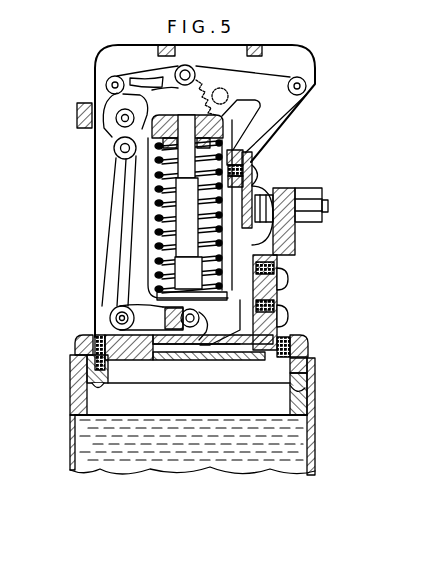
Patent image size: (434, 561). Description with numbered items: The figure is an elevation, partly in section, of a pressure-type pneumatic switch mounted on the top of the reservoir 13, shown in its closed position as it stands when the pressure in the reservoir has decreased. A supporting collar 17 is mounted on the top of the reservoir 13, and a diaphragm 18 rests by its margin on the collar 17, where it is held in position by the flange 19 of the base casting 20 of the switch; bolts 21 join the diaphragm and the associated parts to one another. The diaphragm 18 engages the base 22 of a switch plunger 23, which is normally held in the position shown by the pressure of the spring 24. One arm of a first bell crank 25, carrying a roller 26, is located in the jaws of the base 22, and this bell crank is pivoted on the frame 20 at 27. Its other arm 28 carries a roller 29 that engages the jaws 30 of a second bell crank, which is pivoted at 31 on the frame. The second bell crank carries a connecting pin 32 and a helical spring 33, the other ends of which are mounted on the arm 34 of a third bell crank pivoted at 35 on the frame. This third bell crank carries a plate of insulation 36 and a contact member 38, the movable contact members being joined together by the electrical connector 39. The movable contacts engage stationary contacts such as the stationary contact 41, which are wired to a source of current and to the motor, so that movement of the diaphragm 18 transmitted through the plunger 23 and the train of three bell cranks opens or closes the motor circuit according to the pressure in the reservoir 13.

The reservoir 13 is at (317, 438).
The supporting collar 17 is at (316, 388).
The diaphragm 18 is at (309, 357).
The flange 19 is at (308, 336).
The base casting 20 is at (278, 328).
The bolts 21 is at (316, 398).
The base 22 is at (206, 346).
The switch plunger 23 is at (190, 269).
The spring 24 is at (223, 235).
The bell crank 25 is at (125, 300).
The roller 26 is at (210, 328).
The pivot 27 is at (110, 317).
The arm of the bell crank 28 is at (110, 160).
The roller 29 is at (113, 130).
The jaws 30 is at (103, 106).
The pivot 31 is at (106, 80).
The connecting pin 32 is at (198, 80).
The helical spring 33 is at (199, 84).
The arm 34 is at (245, 86).
The pivot 35 is at (308, 88).
The plate of insulation 36 is at (253, 188).
The contact member 38 is at (295, 241).
The electrical connector 39 is at (285, 184).
The stationary contact 41 is at (290, 200).